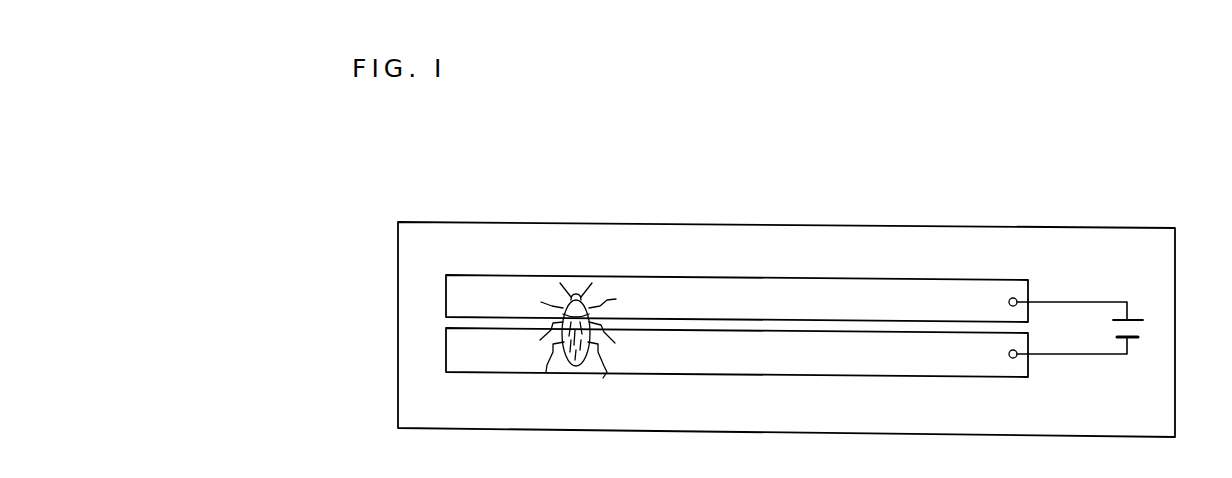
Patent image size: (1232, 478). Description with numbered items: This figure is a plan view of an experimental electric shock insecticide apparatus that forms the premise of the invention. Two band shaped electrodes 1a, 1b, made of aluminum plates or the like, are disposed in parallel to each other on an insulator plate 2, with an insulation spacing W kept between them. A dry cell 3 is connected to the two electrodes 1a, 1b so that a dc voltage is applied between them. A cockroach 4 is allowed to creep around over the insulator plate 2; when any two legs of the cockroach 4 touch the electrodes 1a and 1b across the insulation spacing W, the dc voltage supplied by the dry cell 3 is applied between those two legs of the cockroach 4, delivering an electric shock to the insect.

The band shaped electrode 1a is at (643, 283).
The band shaped electrode 1b is at (657, 356).
The insulation spacing W is at (684, 322).
The insulator plate 2 is at (792, 223).
The dry cell 3 is at (1140, 343).
The cockroach 4 is at (573, 372).